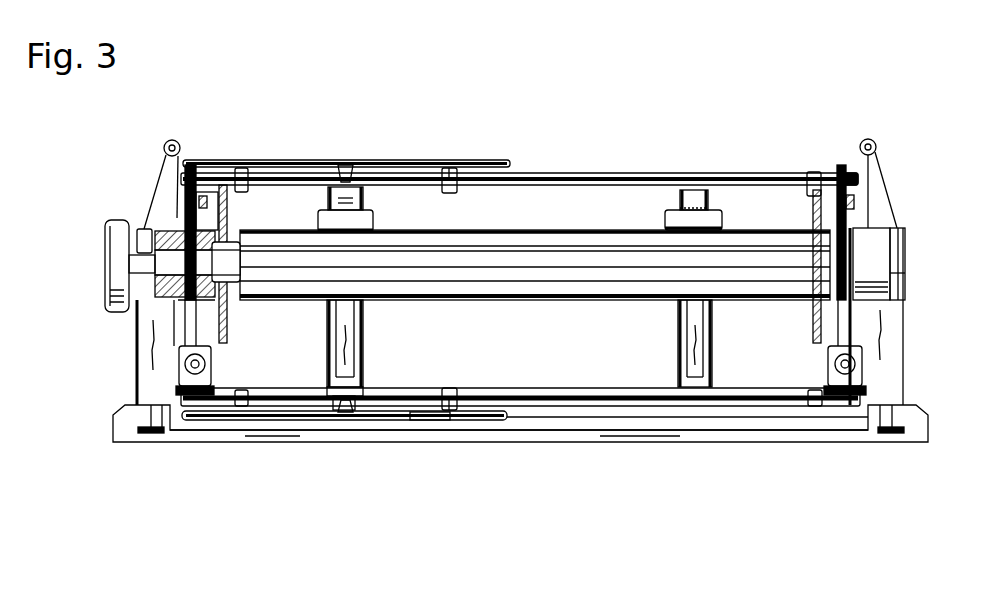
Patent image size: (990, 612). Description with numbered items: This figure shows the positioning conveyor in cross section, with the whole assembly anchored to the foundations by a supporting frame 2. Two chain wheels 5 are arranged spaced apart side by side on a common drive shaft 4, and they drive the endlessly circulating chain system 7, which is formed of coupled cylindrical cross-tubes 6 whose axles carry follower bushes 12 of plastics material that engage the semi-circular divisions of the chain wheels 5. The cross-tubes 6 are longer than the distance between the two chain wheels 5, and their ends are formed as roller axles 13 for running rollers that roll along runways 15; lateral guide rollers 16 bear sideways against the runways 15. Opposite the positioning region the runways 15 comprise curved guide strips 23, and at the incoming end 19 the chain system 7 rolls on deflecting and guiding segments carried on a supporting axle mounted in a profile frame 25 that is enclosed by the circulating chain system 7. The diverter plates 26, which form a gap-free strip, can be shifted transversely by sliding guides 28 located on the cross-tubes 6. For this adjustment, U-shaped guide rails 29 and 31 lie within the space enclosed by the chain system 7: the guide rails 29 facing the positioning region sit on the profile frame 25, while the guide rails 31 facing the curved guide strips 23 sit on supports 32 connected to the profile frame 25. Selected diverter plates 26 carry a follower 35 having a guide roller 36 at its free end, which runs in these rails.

The supporting frame 2 is at (148, 330).
The drive shaft 4 is at (165, 205).
The chain wheels 5 is at (228, 316).
The cylindrical tubes 6 is at (416, 172).
The chain system 7 is at (257, 158).
The follower bushes 12 is at (224, 165).
The roller axles 13 is at (176, 396).
The runways 15 is at (853, 197).
The lateral guide rollers 16 is at (208, 385).
The incoming end 19 is at (682, 447).
The curved guide strips 23 is at (195, 366).
The profile frame 25 is at (586, 228).
The diverter plates 26 is at (416, 414).
The sliding guides 28 is at (452, 168).
The guide rails 29 is at (376, 178).
The guide rails 31 is at (327, 408).
The supports 32 is at (363, 323).
The follower 35 is at (341, 176).
The guide roller 36 is at (350, 178).